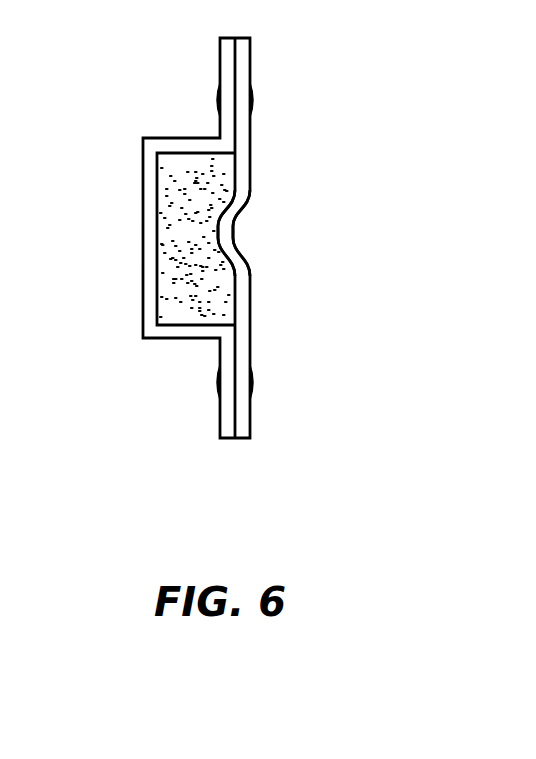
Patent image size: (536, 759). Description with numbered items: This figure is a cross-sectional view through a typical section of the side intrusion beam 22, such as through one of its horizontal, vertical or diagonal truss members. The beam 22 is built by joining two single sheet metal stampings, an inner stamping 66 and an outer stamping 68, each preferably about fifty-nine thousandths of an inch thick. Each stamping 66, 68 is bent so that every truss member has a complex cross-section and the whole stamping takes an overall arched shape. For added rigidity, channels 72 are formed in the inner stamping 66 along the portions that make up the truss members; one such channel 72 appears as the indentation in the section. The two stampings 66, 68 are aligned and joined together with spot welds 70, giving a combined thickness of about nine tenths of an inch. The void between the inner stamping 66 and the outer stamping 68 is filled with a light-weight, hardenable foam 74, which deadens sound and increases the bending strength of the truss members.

The intrusion beam 22 is at (306, 188).
The inner stamping 66 is at (240, 325).
The outer stamping 68 is at (148, 180).
The spot welds 70 is at (254, 97).
The channels 72 is at (242, 238).
The hardenable foam 74 is at (178, 278).